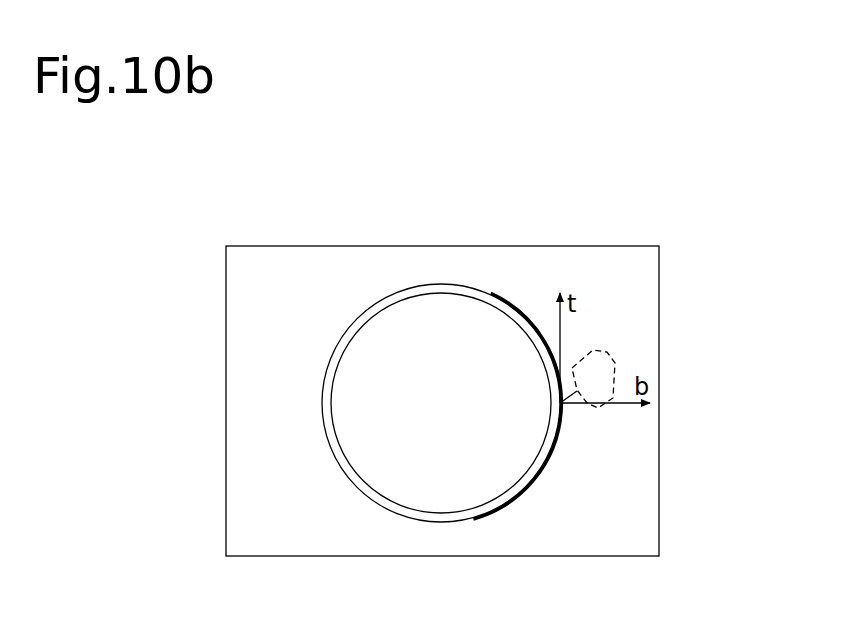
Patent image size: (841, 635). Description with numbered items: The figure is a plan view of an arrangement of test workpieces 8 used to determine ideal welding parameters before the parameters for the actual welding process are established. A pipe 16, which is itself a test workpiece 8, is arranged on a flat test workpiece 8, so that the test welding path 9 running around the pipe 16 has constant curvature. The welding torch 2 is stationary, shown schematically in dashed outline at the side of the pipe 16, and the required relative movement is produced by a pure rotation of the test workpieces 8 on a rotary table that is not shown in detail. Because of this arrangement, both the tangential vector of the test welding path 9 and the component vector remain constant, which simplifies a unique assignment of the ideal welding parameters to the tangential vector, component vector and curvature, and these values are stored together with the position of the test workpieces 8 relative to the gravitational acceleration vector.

The test workpiece 8 is at (410, 284).
The pipe 16 is at (440, 290).
The test welding path 9 is at (507, 302).
The welding torch 2 is at (599, 362).